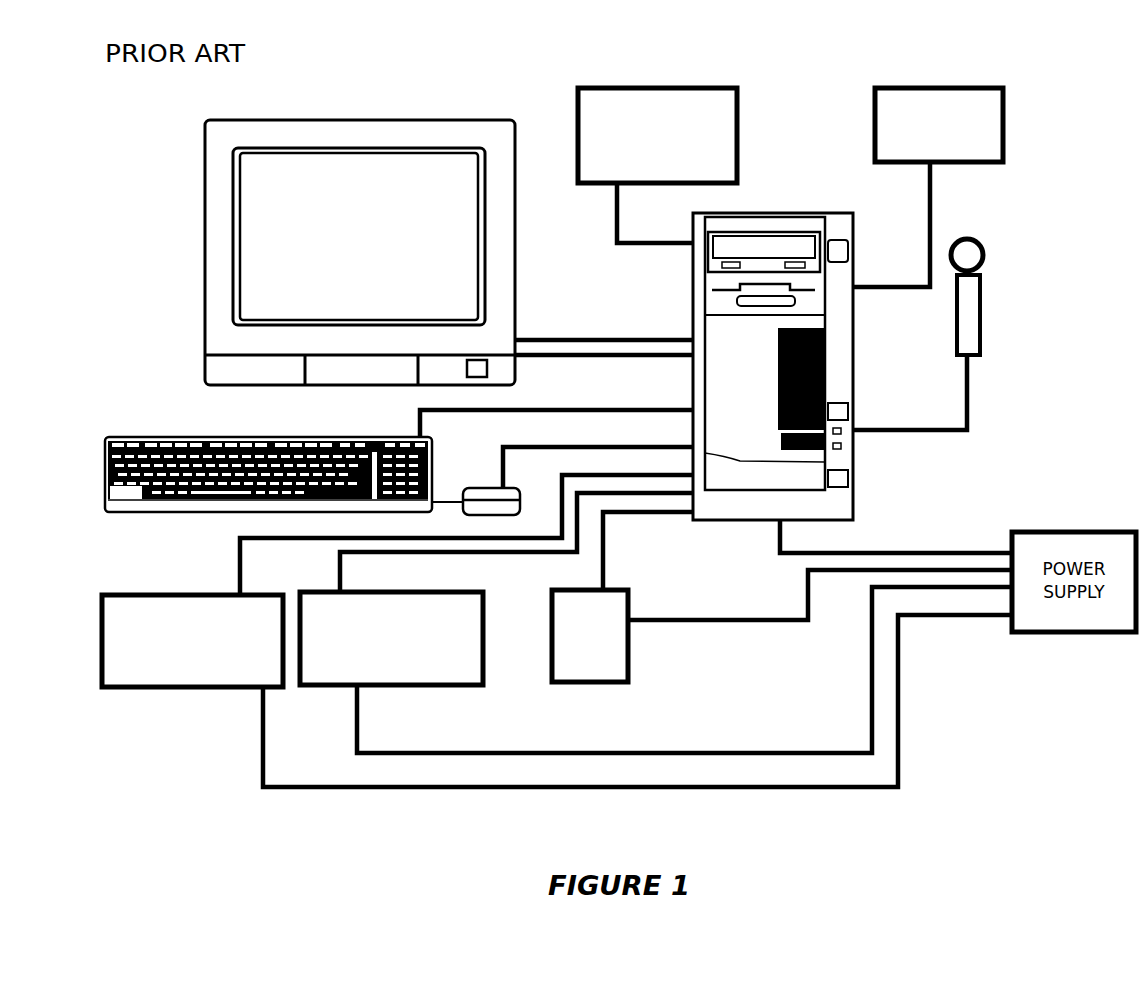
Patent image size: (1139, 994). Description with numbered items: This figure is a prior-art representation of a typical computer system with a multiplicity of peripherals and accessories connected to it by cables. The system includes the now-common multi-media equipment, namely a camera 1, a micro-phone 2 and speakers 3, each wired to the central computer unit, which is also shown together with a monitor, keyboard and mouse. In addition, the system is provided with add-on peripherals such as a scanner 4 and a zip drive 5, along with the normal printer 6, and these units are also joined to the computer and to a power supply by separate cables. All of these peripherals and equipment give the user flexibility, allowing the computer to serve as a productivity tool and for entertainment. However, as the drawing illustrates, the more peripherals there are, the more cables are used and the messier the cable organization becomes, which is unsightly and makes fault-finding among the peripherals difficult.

The camera 1 is at (1003, 108).
The micro-phone 2 is at (983, 278).
The speakers 3 is at (702, 88).
The scanner 4 is at (476, 687).
The zip drive 5 is at (632, 682).
The printer 6 is at (176, 687).